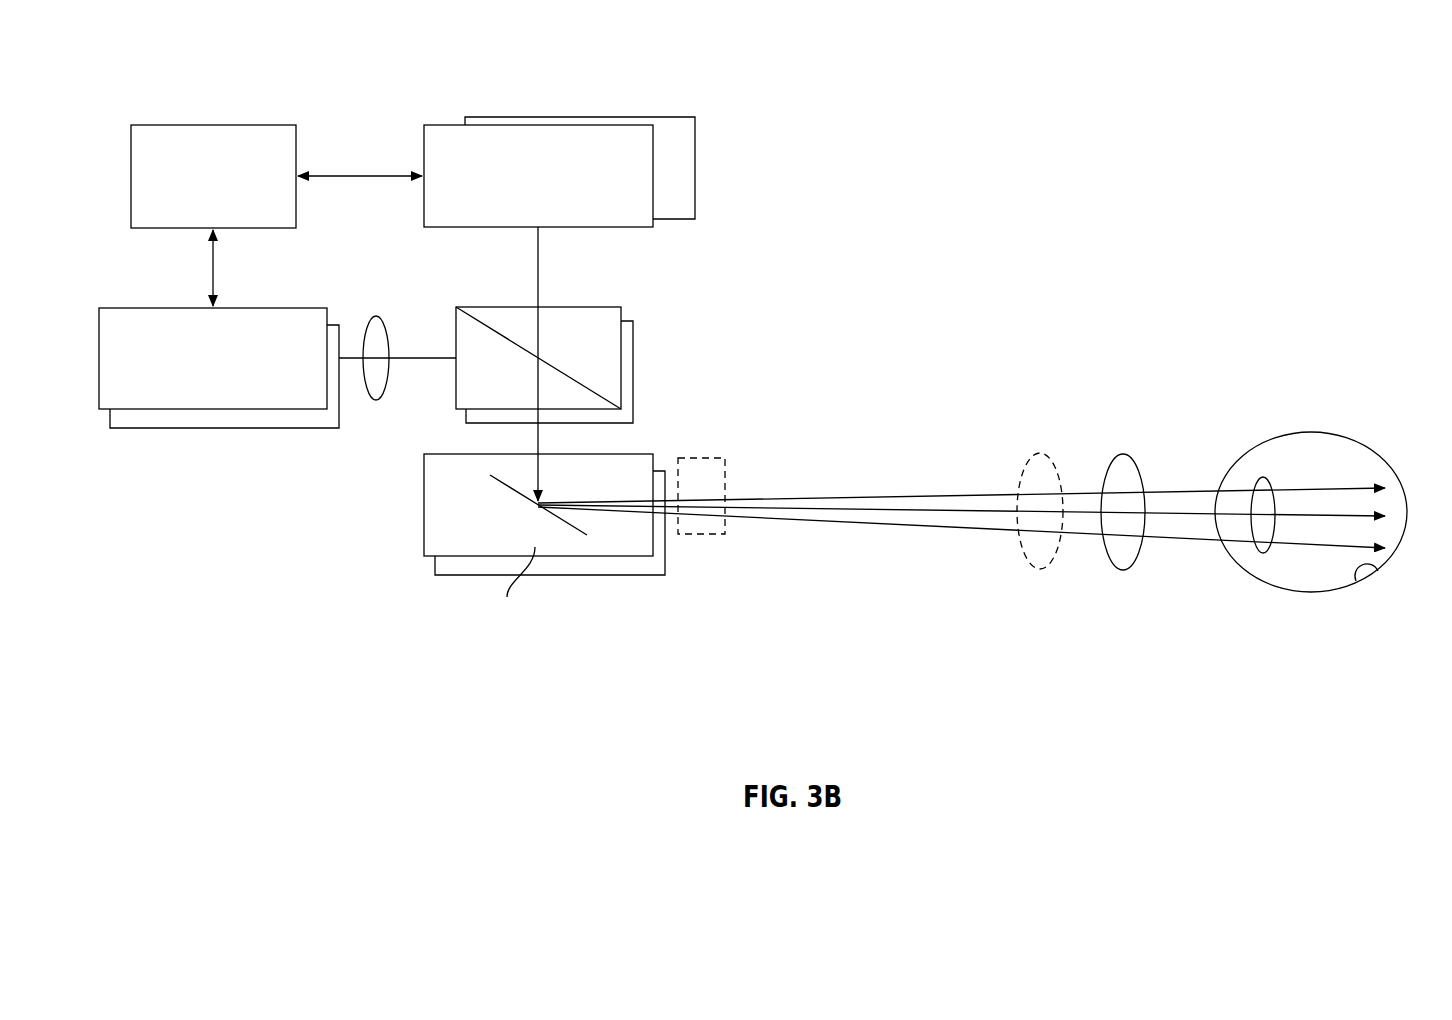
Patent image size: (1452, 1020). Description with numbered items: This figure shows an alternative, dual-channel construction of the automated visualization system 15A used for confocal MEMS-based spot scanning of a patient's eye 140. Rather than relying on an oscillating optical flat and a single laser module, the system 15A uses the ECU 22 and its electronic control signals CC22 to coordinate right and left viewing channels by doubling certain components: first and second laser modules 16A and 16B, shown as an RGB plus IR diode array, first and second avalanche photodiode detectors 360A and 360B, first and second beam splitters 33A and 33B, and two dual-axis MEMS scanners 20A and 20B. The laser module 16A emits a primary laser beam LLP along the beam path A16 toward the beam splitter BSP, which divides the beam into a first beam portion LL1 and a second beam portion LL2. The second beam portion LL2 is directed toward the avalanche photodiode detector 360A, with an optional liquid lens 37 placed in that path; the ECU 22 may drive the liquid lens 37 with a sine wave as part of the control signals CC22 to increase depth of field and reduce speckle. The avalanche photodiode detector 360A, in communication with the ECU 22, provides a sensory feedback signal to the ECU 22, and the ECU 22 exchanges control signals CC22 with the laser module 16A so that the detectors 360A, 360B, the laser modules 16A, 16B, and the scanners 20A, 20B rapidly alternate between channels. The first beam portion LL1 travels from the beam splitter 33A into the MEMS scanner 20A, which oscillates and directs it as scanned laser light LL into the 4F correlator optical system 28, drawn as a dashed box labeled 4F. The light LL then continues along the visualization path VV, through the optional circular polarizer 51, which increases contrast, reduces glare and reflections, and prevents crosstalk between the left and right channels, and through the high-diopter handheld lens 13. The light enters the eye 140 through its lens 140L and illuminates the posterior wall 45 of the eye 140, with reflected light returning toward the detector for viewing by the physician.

The ECU 22 is at (187, 125).
The electronic control signals CC22 is at (317, 220).
The first laser module 16A is at (445, 125).
The second laser module 16B is at (622, 117).
The automated visualization system 15A is at (1116, 116).
The first APD detector 360A is at (170, 308).
The second APD detector 360B is at (195, 428).
The liquid lens 37 is at (377, 316).
The first beam splitter 33A is at (570, 307).
The second beam splitter 33B is at (633, 393).
The beam splitter BSP is at (633, 358).
The beam path A16 is at (540, 263).
The primary laser beam LLP is at (516, 264).
The second beam portion LL2 is at (405, 355).
The first beam portion LL1 is at (538, 447).
The first dual-axis MEMS scanner 20A is at (424, 506).
The second dual-axis MEMS scanner 20B is at (460, 575).
The scanned light beams LL is at (970, 495).
The visualization path VV is at (926, 455).
The 4F correlator optical system 4F is at (701, 496).
The 4F correlator optical system 28 is at (695, 536).
The circular polarizer 51 is at (1025, 556).
The handheld lens 13 is at (1126, 422).
The eye 140 is at (1376, 394).
The lens of the eye 140L is at (1263, 477).
The posterior wall 45 is at (1375, 576).